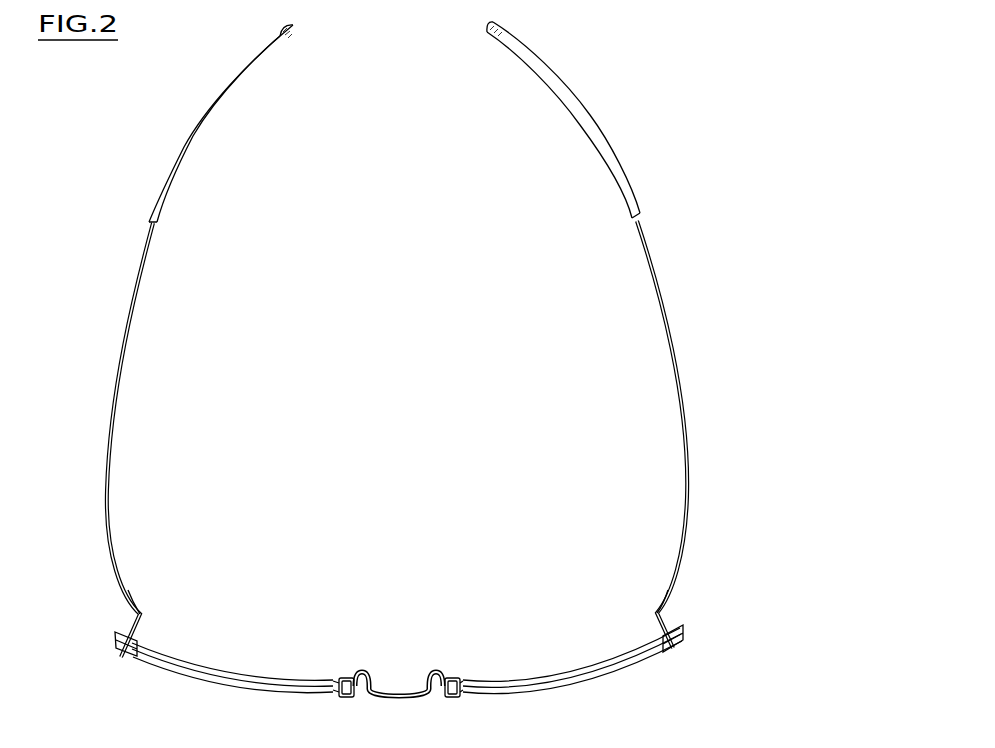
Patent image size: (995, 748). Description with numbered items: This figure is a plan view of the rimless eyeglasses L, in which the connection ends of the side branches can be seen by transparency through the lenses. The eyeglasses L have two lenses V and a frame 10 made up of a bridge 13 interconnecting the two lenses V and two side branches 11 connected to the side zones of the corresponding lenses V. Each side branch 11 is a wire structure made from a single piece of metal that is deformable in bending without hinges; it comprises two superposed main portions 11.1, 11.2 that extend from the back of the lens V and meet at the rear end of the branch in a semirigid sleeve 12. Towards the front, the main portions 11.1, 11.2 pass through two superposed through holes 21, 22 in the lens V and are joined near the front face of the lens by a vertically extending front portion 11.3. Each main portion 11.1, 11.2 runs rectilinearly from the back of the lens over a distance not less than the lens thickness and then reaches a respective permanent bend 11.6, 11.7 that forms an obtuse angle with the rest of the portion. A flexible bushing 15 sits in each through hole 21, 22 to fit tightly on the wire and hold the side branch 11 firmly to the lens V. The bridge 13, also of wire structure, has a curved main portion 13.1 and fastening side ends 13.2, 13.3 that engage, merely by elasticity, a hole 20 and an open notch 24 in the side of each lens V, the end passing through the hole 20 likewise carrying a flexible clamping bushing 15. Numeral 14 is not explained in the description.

The frame 10 is at (113, 251).
The side branch 11 is at (395, 439).
The main portion 11.1 is at (395, 439).
The main portion 11.2 is at (106, 434).
The front portion 11.3 is at (117, 640).
The permanent bend 11.6 is at (398, 592).
The permanent bend 11.7 is at (145, 615).
The semirigid sleeve 12 is at (223, 87).
The bridge 13 is at (400, 667).
The curved main portion 13.1 is at (400, 667).
The fastening side end 13.2 is at (400, 667).
The fastening side end 13.3 is at (400, 667).
The temple 14 is at (395, 439).
The flexible bushing 15 is at (431, 657).
The hole 20 is at (400, 667).
The through hole 21 is at (401, 642).
The through hole 22 is at (401, 642).
The open notch 24 is at (398, 683).
The eyeglasses L is at (458, 194).
The lens V is at (135, 660).